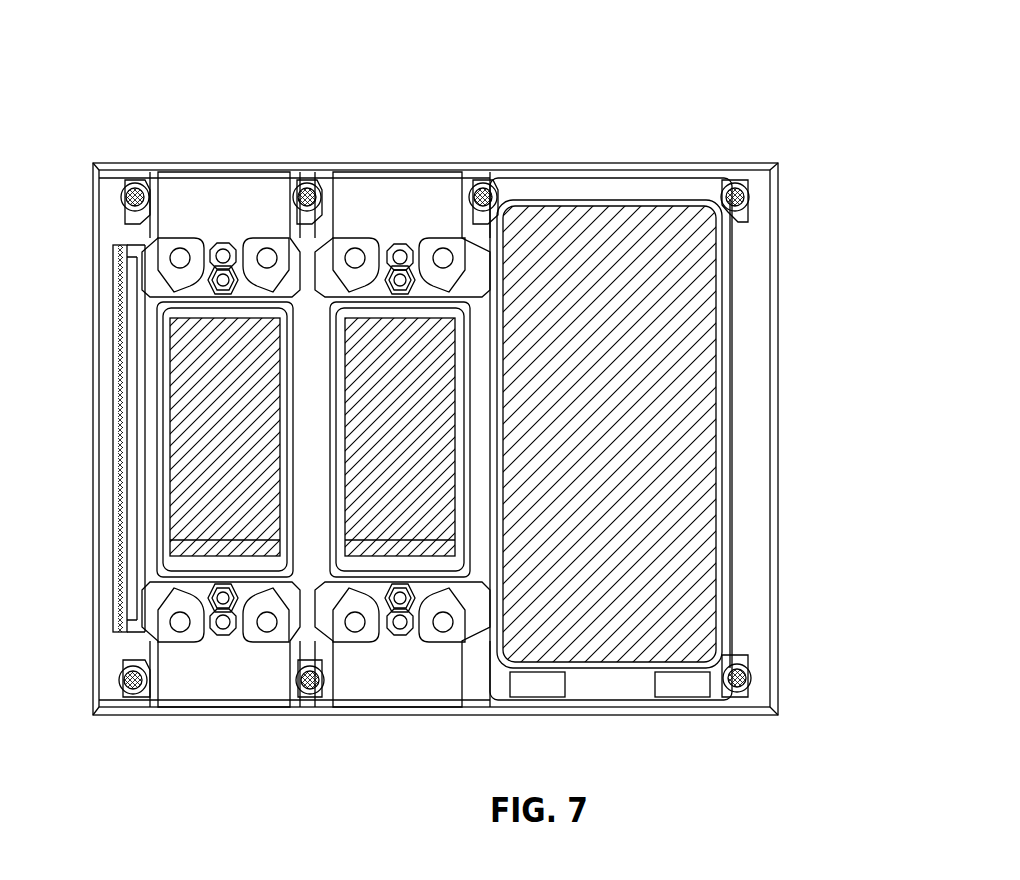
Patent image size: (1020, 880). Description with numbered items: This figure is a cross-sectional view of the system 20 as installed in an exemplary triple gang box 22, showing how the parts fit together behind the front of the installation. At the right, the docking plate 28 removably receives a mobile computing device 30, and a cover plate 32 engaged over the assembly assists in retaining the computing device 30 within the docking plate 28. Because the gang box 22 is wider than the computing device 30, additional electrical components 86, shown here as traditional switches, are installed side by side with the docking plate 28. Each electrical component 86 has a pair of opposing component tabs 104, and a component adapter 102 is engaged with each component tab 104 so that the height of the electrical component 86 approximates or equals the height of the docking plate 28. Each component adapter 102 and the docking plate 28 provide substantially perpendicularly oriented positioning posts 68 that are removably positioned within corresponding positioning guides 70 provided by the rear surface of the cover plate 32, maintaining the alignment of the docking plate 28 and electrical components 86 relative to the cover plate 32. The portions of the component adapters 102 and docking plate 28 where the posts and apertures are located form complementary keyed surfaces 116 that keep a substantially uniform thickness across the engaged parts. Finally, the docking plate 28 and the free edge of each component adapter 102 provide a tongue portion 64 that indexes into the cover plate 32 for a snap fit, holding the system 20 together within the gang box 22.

The system 20 is at (743, 86).
The gang box 22 is at (104, 505).
The docking plate 28 is at (598, 176).
The mobile computing device 30 is at (711, 340).
The cover plate 32 is at (794, 398).
The tongue portion 64 is at (376, 178).
The positioning post 68 is at (141, 193).
The positioning guide 70 is at (125, 197).
The electrical component 86 is at (358, 347).
The component adapter 102 is at (221, 166).
The component tab 104 is at (426, 272).
The keyed surface 116 is at (145, 178).